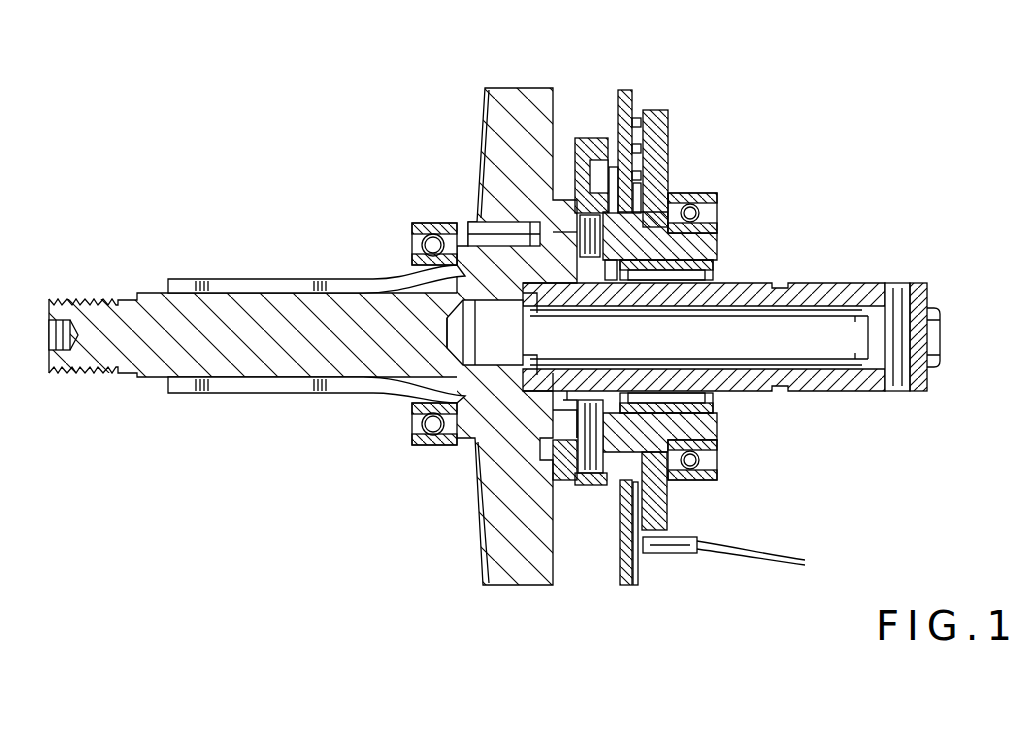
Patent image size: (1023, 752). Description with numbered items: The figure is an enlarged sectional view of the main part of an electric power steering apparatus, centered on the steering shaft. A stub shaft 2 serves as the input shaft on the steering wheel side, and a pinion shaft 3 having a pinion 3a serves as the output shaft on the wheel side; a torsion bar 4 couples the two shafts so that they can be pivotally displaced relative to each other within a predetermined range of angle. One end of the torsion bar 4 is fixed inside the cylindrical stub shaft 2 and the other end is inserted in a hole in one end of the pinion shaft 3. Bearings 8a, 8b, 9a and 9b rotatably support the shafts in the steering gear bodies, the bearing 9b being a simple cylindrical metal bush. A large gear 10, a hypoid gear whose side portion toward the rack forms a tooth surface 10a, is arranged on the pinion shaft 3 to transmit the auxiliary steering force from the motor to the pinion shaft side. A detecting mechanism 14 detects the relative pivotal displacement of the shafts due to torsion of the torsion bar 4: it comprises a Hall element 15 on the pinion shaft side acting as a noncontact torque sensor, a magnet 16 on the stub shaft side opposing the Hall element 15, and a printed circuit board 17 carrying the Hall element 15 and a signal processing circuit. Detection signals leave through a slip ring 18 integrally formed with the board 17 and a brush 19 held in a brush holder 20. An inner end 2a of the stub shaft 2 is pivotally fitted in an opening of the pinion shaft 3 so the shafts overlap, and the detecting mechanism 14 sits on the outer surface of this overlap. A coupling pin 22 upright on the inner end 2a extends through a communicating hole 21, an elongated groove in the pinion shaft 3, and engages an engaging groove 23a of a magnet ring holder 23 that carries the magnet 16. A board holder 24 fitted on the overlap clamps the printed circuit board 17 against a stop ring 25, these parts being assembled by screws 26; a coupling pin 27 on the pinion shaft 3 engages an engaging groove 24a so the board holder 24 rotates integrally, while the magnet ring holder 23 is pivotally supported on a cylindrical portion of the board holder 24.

The stub shaft 2 is at (857, 298).
The inner end of the stub shaft 2a is at (570, 378).
The pinion shaft 3 is at (152, 355).
The pinion 3a is at (223, 383).
The torsion bar 4 is at (813, 340).
The bearing 8a is at (712, 207).
The bearing 8b is at (425, 222).
The bearing 9a is at (713, 270).
The bearing 9b is at (535, 300).
The large gear 10 is at (523, 108).
The tooth surface 10a is at (483, 120).
The detecting mechanism 14 is at (723, 95).
The Hall element 15 is at (613, 165).
The magnet 16 is at (598, 165).
The printed circuit board 17 is at (625, 90).
The slip ring 18 is at (634, 122).
The brush 19 is at (636, 130).
The brush holder 20 is at (657, 153).
The communicating hole 21 is at (567, 420).
The coupling pin 22 is at (580, 484).
The magnet ring holder 23 is at (572, 160).
The engaging groove 23a is at (570, 463).
The board holder 24 is at (677, 194).
The engaging groove 24a is at (557, 200).
The stop ring 25 is at (638, 190).
The screws 26 is at (668, 508).
The coupling pin 27 is at (590, 260).